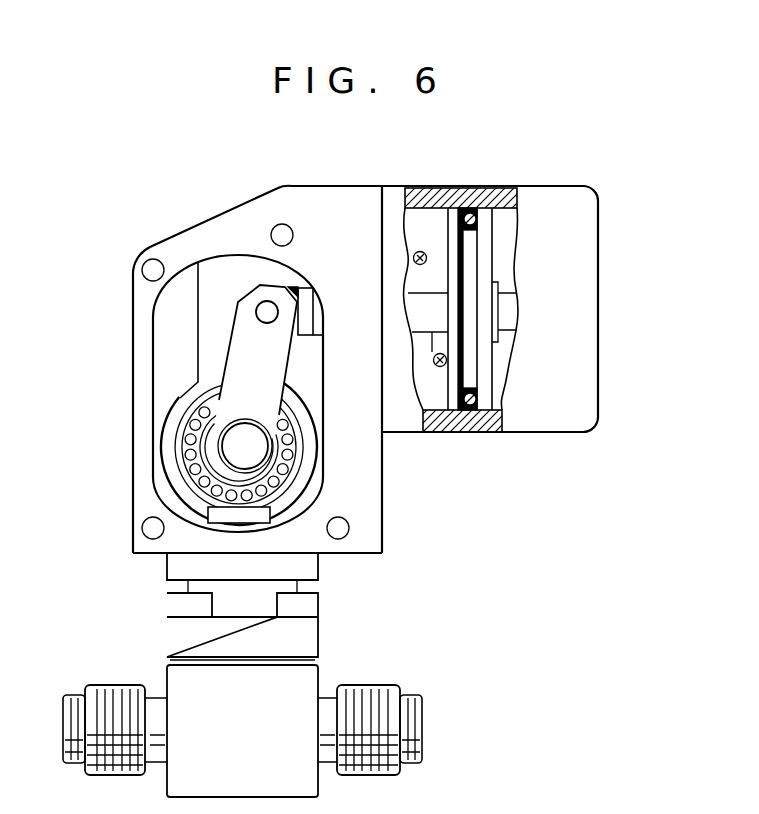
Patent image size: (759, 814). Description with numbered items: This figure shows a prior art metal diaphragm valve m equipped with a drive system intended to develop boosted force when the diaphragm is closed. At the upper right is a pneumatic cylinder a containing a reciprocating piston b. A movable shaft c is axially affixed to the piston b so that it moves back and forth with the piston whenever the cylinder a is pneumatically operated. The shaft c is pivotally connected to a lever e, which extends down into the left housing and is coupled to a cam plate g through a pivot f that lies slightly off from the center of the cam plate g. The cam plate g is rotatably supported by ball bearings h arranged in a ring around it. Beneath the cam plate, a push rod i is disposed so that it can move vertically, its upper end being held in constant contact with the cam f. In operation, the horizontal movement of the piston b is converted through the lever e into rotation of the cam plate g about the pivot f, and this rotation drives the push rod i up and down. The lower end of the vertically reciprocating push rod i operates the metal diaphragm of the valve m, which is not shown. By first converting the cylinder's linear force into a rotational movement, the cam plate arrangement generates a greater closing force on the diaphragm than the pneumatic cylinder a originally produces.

The pneumatic cylinder a is at (580, 202).
The piston b is at (487, 215).
The movable shaft c is at (425, 300).
The pivot pin d is at (263, 303).
The lever e is at (243, 340).
The pivot f is at (233, 435).
The cam plate g is at (208, 467).
The ball bearings h is at (187, 448).
The push rod i is at (220, 523).
The metal diaphragm valve m is at (405, 606).